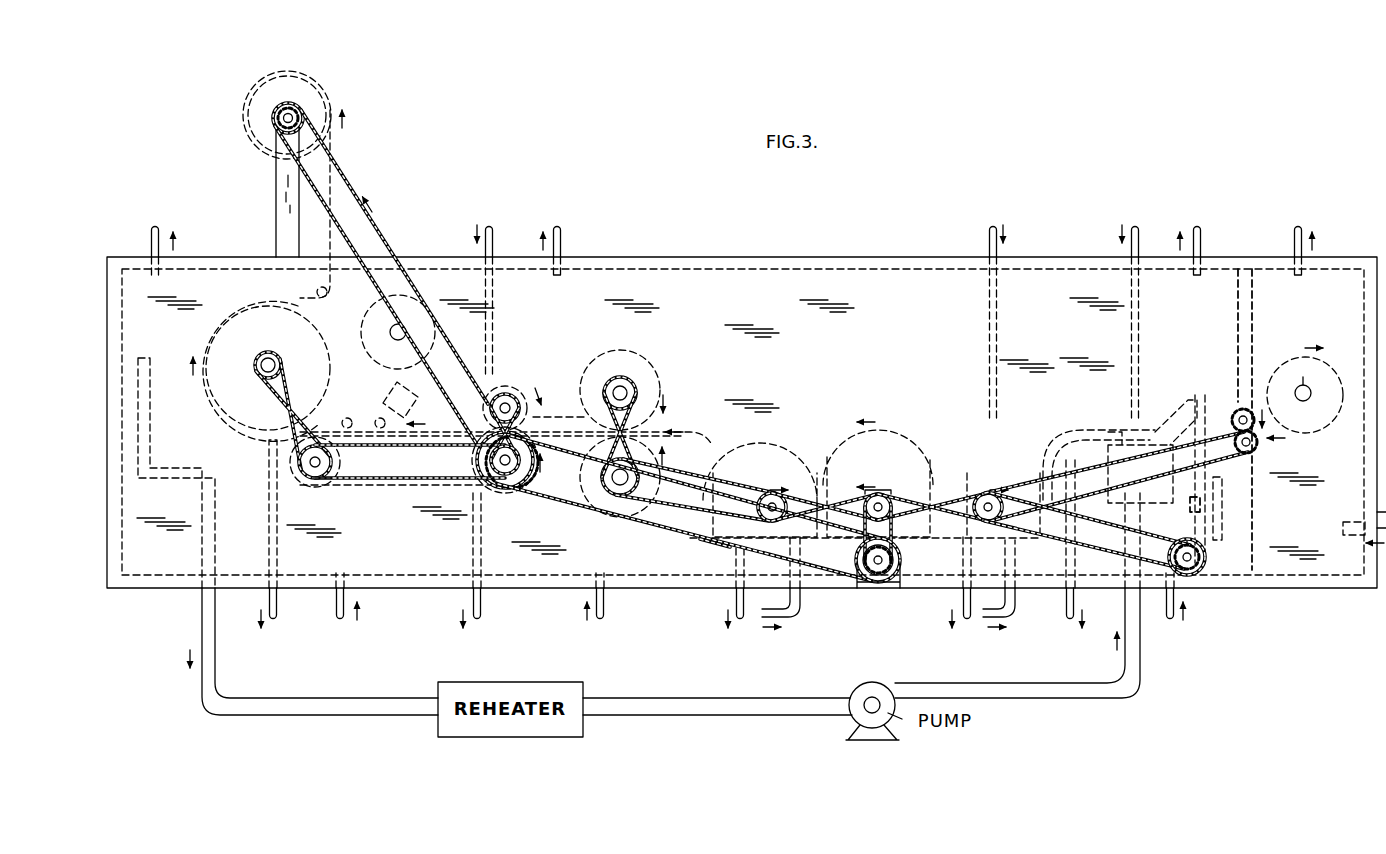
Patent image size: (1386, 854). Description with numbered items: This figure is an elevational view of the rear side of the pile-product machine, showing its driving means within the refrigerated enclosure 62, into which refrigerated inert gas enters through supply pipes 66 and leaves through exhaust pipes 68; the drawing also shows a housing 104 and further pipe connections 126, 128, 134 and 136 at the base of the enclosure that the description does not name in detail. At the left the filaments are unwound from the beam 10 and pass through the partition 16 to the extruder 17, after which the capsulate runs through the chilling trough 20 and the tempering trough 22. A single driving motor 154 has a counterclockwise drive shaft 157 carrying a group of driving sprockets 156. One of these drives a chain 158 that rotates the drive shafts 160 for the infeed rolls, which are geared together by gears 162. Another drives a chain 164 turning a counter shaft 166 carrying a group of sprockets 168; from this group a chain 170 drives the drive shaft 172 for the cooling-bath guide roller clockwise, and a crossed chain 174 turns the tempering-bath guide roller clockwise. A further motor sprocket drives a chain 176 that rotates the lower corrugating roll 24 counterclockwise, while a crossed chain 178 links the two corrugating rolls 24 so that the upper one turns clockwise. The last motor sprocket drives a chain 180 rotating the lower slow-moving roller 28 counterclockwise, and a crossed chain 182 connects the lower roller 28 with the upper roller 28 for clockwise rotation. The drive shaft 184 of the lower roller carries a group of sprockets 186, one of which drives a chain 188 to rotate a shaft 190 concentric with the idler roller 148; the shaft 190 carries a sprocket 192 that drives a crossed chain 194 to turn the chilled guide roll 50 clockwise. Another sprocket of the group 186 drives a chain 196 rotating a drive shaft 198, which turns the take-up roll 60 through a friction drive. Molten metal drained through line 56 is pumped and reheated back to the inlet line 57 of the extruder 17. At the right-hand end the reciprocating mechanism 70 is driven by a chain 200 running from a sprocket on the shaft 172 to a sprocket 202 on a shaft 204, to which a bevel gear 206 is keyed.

The beam 10 is at (1305, 395).
The partition 16 is at (1237, 343).
The extruder 17 is at (1175, 410).
The chilling trough 20 is at (1065, 446).
The tempering trough 22 is at (719, 543).
The corrugating roll 24 is at (636, 356).
The slow-moving roller 28 is at (508, 392).
The guide roll 50 is at (327, 345).
The line 56 is at (215, 650).
The inlet line 57 is at (1141, 670).
The take-up roll 60 is at (269, 81).
The refrigerated enclosure 62 is at (760, 254).
The supply pipe 66 is at (496, 238).
The exhaust pipe 68 is at (152, 238).
The reciprocating mechanism 70 is at (1232, 502).
The housing 104 is at (1115, 430).
The drain pipe 126 is at (1018, 616).
The inlet pipe 128 is at (965, 618).
The drain pipe 134 is at (806, 615).
The inlet pipe 136 is at (740, 620).
The idler roller 148 is at (343, 479).
The driving motor 154 is at (868, 580).
The driving sprockets 156 is at (888, 580).
The drive shaft 157 is at (862, 553).
The chain 158 is at (1093, 486).
The drive shaft 160 is at (1240, 418).
The gear 162 is at (1250, 412).
The chain 164 is at (892, 528).
The counter shaft 166 is at (884, 498).
The sprockets 168 is at (866, 498).
The chain 170 is at (956, 505).
The drive shaft 172 is at (996, 498).
The crossed chain 174 is at (773, 495).
The chain 176 is at (693, 516).
The crossed chain 178 is at (640, 392).
The chain 180 is at (691, 508).
The crossed chain 182 is at (522, 411).
The drive shaft 184 is at (530, 470).
The sprockets 186 is at (505, 474).
The chain 188 is at (392, 477).
The shaft 190 is at (310, 474).
The sprocket 192 is at (318, 448).
The crossed chain 194 is at (280, 386).
The chain 196 is at (352, 182).
The drive shaft 198 is at (283, 120).
The chain 200 is at (1058, 543).
The sprocket 202 is at (1178, 554).
The shaft 204 is at (1193, 565).
The bevel gear 206 is at (1183, 545).